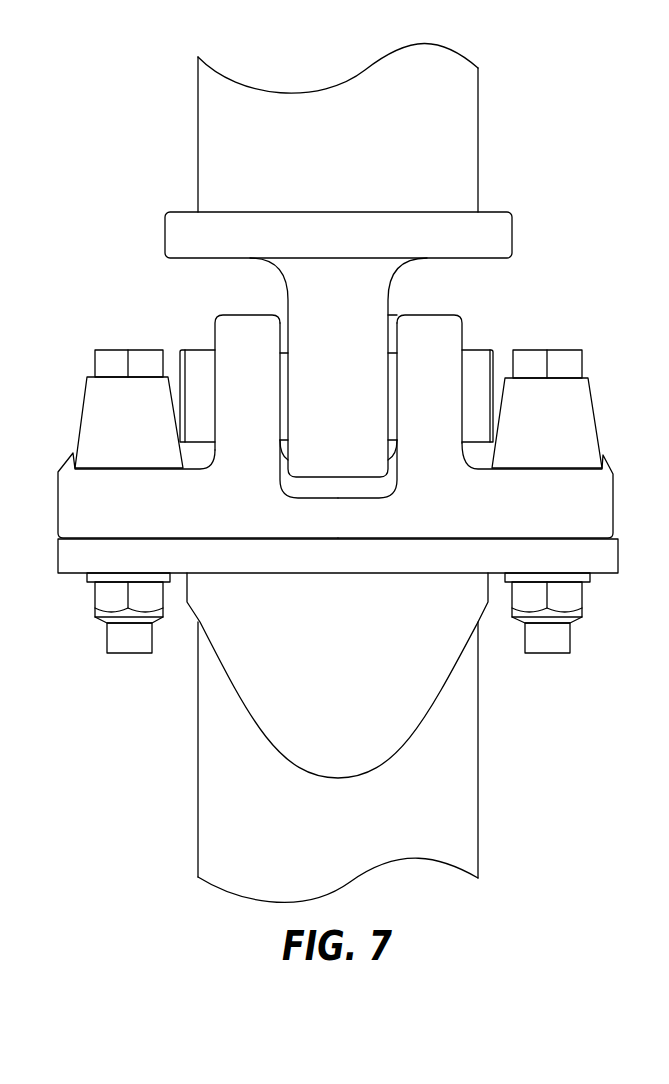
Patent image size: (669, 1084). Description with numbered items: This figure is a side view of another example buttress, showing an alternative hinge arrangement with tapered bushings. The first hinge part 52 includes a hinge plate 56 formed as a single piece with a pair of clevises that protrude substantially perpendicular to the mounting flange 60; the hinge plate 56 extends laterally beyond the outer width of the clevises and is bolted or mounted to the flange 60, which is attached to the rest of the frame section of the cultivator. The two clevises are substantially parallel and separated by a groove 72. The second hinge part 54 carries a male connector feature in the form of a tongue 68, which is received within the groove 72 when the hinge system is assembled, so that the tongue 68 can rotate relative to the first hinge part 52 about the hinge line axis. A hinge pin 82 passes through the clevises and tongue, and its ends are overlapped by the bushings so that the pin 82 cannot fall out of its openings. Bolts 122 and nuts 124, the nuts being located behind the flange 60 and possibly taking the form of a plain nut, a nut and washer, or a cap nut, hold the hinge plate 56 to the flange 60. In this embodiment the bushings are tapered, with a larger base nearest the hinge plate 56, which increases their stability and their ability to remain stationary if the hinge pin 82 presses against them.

The first hinge part 52 is at (238, 494).
The second hinge part 54 is at (493, 227).
The hinge plate 56 is at (478, 494).
The flange 60 is at (421, 566).
The tongue 68 is at (340, 342).
The groove 72 is at (400, 310).
The hinge pin 82 is at (478, 360).
The bolt 122 is at (572, 360).
The nut 124 is at (568, 600).